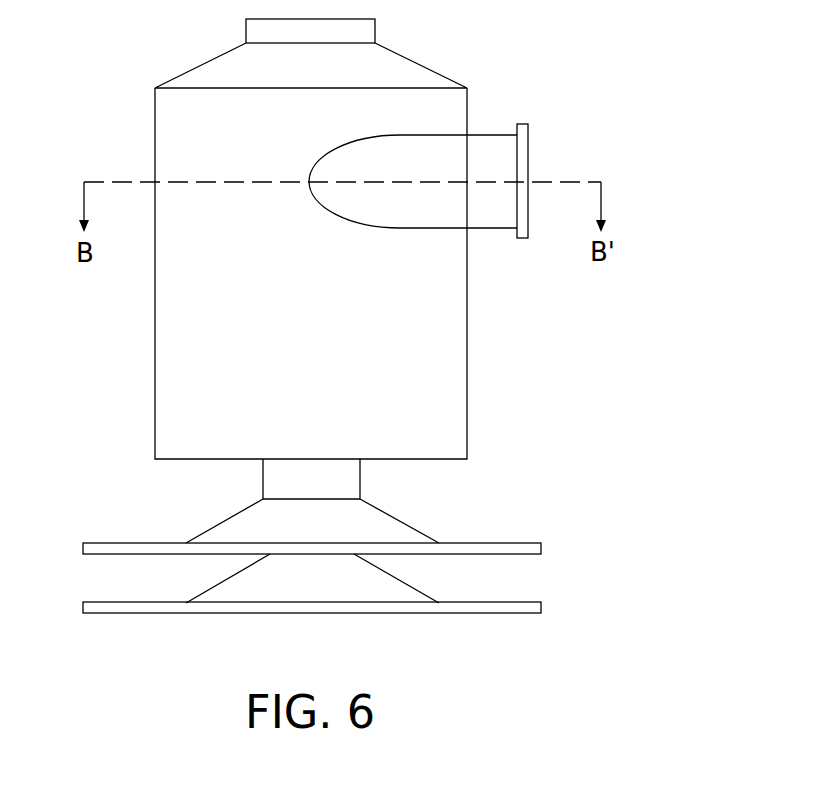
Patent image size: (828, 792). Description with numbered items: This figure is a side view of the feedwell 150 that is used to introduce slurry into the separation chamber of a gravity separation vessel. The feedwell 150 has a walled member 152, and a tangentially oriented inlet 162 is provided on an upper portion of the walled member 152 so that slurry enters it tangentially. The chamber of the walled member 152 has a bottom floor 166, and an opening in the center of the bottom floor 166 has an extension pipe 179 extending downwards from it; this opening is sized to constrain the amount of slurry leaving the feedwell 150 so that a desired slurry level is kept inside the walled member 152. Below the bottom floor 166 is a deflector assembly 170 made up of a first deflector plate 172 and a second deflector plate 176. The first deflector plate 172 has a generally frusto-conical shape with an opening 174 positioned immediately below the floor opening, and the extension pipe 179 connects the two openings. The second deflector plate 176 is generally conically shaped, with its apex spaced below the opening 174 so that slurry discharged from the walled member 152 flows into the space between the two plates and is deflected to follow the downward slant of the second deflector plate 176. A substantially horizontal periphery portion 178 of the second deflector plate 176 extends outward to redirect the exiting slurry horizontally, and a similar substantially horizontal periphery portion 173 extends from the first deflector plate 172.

The feedwell 150 is at (541, 51).
The walled member 152 is at (468, 352).
The tangentially oriented inlet 162 is at (529, 143).
The bottom floor 166 is at (437, 460).
The deflector assembly 170 is at (587, 531).
The first deflector plate 172 is at (235, 512).
The substantially horizontal periphery portion 173 is at (489, 549).
The opening 174 is at (310, 499).
The second deflector plate 176 is at (218, 583).
The substantially horizontal periphery portion 178 is at (427, 604).
The extension pipe 179 is at (347, 481).